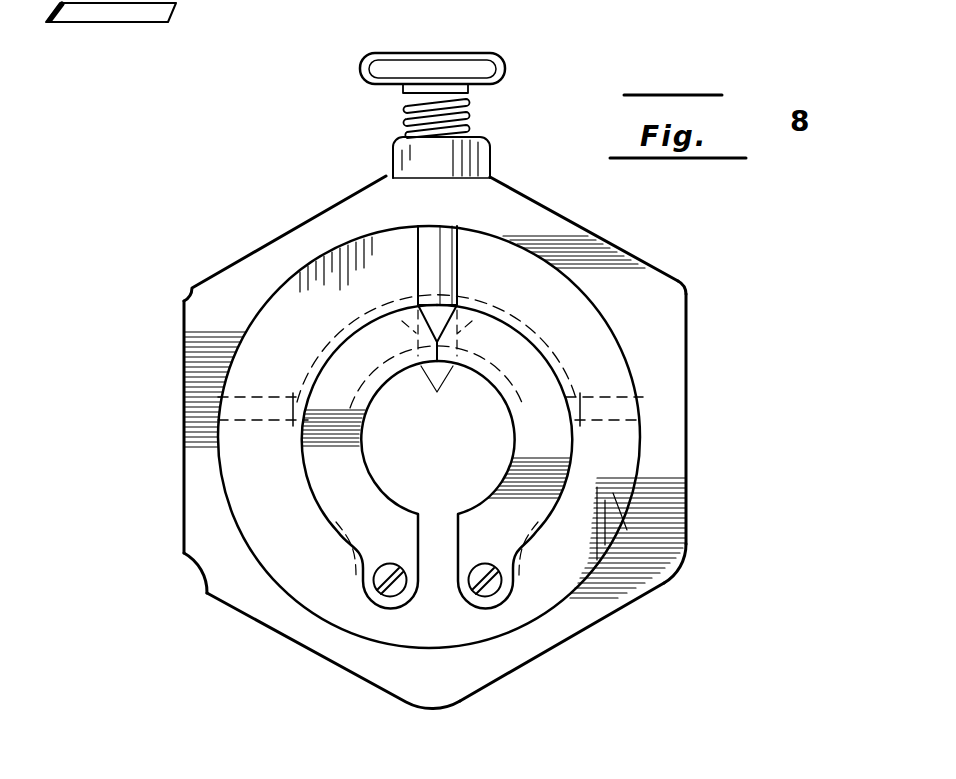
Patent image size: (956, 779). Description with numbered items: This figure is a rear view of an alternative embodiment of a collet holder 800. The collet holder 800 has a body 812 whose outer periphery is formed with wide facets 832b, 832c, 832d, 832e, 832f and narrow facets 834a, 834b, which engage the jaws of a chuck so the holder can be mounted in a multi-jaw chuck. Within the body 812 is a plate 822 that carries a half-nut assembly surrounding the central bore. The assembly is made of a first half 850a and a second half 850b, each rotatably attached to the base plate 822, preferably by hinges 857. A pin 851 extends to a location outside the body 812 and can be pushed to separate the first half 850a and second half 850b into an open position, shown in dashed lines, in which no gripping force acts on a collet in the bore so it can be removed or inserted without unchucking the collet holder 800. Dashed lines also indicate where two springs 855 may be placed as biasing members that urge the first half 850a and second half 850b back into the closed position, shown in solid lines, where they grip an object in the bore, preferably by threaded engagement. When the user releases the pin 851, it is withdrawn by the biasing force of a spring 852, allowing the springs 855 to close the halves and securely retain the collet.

The collet holder 800 is at (108, 111).
The body 812 is at (184, 288).
The plate 822 is at (676, 571).
The wide facet 832b is at (686, 440).
The wide facet 832c is at (597, 630).
The wide facet 832d is at (273, 630).
The wide facet 832e is at (183, 421).
The wide facet 832f is at (292, 232).
The narrow facet 834a is at (665, 285).
The narrow facet 834b is at (210, 582).
The first half 850a is at (317, 450).
The second half 850b is at (533, 450).
The pin 851 is at (507, 65).
The spring 852 is at (472, 110).
The spring 855 is at (270, 397).
The hinge 857 is at (390, 603).